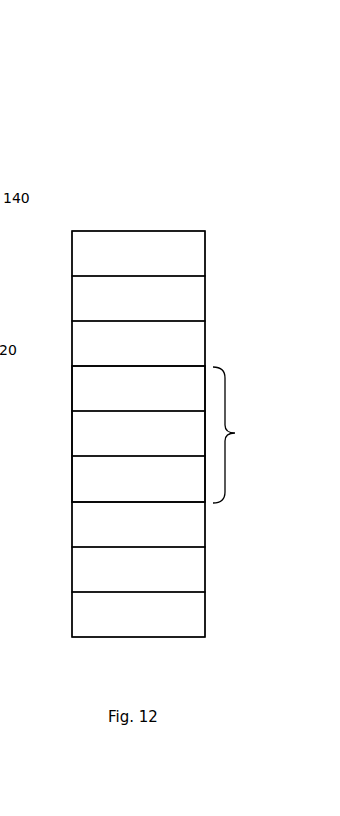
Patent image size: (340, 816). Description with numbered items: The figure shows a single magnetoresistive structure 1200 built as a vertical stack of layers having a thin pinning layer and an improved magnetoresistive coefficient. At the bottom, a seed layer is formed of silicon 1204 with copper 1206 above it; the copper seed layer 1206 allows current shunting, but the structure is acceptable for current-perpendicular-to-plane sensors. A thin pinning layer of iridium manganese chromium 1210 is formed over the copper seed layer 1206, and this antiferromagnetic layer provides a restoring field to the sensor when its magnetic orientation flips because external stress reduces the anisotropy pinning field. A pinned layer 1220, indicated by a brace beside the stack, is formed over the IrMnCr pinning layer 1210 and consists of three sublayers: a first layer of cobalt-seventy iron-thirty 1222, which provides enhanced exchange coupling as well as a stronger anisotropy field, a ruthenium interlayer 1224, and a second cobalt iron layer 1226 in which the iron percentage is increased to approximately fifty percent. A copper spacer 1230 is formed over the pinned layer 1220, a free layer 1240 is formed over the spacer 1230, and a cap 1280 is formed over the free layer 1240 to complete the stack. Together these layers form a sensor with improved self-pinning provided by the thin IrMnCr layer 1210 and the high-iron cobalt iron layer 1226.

The single magnetoresistive structure 1200 is at (171, 155).
The cap 1280 is at (182, 248).
The free layer 1240 is at (185, 300).
The spacer 1230 is at (180, 345).
The pinned layer 1220 is at (250, 378).
The CoFe50 layer 1226 is at (93, 400).
The interlayer 1224 is at (93, 442).
The Co70Fe30 layer 1222 is at (85, 477).
The IrMnCr pinning layer 1210 is at (247, 505).
The copper seed layer 1206 is at (173, 570).
The silicon seed layer 1204 is at (157, 625).